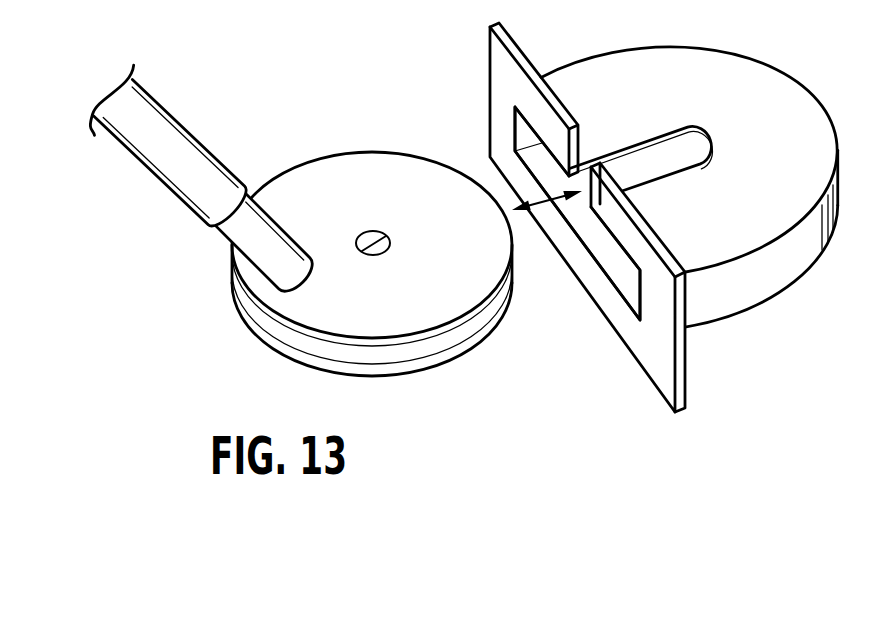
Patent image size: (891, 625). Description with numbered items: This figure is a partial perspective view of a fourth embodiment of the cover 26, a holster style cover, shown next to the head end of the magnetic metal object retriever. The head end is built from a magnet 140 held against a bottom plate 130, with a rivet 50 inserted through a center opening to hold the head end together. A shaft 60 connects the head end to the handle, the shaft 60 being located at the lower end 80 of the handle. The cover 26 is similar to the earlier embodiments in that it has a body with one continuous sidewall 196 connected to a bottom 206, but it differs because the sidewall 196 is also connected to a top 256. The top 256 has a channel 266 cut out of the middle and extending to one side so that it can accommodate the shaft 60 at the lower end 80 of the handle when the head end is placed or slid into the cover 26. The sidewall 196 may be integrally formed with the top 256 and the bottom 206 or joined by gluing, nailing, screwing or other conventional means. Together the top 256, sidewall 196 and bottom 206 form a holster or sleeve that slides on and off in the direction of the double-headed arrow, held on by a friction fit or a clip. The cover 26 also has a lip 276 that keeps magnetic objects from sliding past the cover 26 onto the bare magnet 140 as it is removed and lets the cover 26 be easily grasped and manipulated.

The cover 26 is at (712, 172).
The rivet 50 is at (372, 260).
The shaft 60 is at (245, 223).
The lower end 80 is at (181, 145).
The bottom plate 130 is at (477, 344).
The magnet 140 is at (292, 338).
The sidewall 196 is at (768, 270).
The bottom 206 is at (630, 277).
The top 256 is at (742, 92).
The channel 266 is at (660, 153).
The lip 276 is at (562, 217).